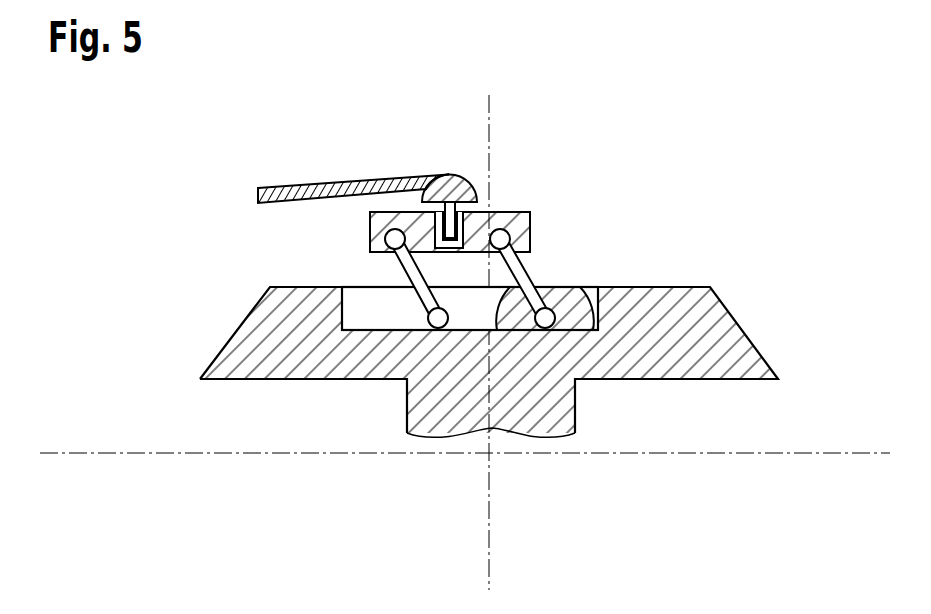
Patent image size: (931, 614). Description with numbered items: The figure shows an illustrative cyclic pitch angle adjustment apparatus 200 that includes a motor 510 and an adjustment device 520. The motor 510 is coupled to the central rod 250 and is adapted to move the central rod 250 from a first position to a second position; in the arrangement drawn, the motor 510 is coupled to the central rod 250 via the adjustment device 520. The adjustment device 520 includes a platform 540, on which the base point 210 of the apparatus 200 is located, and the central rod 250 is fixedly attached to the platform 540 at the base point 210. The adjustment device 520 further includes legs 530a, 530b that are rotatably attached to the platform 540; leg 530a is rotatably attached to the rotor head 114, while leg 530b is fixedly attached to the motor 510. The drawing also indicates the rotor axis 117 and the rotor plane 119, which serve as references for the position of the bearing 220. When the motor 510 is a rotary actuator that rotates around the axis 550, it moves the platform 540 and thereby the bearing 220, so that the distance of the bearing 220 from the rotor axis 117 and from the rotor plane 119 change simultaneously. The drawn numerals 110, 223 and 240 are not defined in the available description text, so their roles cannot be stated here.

The lever device 110 is at (357, 112).
The head top surface 223 is at (460, 163).
The bearing 220 is at (448, 174).
The lever arm 240 is at (290, 188).
The central rod 250 is at (448, 229).
The adjustment device 520 is at (545, 250).
The leg 530a is at (410, 265).
The leg 530b is at (528, 279).
The motor 510 is at (583, 287).
The cyclic pitch angle adjustment apparatus 200 is at (750, 170).
The platform 540 is at (386, 228).
The rotor head 114 is at (735, 347).
The base point 210 is at (455, 253).
The axis 550 is at (545, 333).
The rotor plane 119 is at (725, 455).
The rotor axis 117 is at (489, 568).